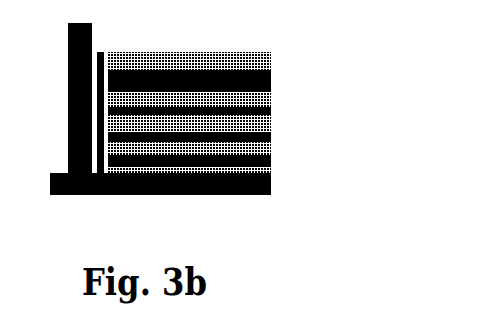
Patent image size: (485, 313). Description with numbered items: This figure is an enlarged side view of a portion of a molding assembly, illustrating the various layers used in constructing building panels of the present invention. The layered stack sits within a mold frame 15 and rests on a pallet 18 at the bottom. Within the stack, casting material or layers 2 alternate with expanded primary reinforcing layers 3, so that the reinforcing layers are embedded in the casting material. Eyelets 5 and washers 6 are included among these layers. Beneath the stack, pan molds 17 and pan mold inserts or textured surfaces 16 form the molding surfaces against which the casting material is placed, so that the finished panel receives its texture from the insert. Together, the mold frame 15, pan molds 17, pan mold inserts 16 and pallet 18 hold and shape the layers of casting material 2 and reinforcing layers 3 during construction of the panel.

The casting material layer 2 is at (274, 63).
The expanded primary reinforcing layer 3 is at (275, 152).
The eyelet 5 is at (221, 82).
The washer 6 is at (274, 105).
The mold frame 15 is at (96, 35).
The pan mold insert 16 is at (275, 162).
The pan mold 17 is at (275, 172).
The pallet 18 is at (274, 185).